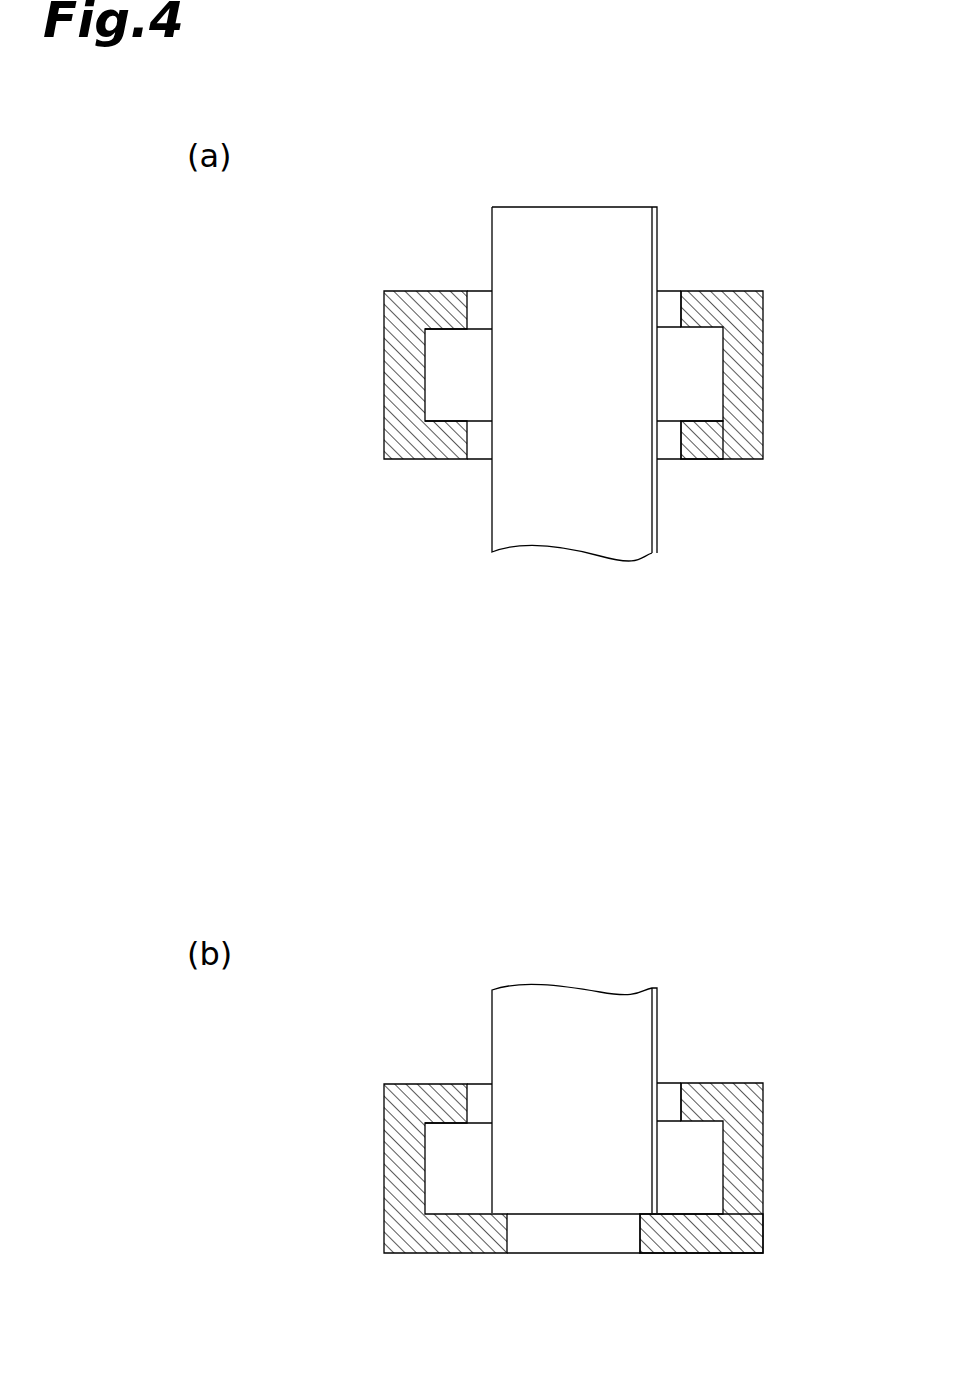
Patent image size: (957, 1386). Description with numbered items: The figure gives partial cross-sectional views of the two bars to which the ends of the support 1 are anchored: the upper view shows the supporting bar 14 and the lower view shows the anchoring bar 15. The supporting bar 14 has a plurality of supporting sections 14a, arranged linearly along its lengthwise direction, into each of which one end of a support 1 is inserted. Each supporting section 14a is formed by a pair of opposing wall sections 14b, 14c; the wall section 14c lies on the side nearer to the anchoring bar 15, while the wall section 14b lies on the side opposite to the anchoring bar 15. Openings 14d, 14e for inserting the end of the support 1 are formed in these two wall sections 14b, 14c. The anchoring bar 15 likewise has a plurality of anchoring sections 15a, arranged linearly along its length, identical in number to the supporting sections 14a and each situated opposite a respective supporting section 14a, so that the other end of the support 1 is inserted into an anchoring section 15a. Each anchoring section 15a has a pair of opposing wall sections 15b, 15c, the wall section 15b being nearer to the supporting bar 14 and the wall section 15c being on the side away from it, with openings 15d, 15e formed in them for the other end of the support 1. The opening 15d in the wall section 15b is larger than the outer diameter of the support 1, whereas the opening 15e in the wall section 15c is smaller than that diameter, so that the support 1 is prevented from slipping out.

The support 1 is at (610, 206).
The supporting bar 14 is at (640, 359).
The supporting section 14a is at (488, 289).
The wall section 14b is at (724, 291).
The wall section 14c is at (727, 459).
The opening 14d is at (675, 310).
The opening 14e is at (675, 440).
The anchoring bar 15 is at (641, 1155).
The anchoring section 15a is at (661, 1078).
The wall section 15b is at (726, 1083).
The wall section 15c is at (727, 1253).
The opening 15d is at (470, 1105).
The opening 15e is at (515, 1243).